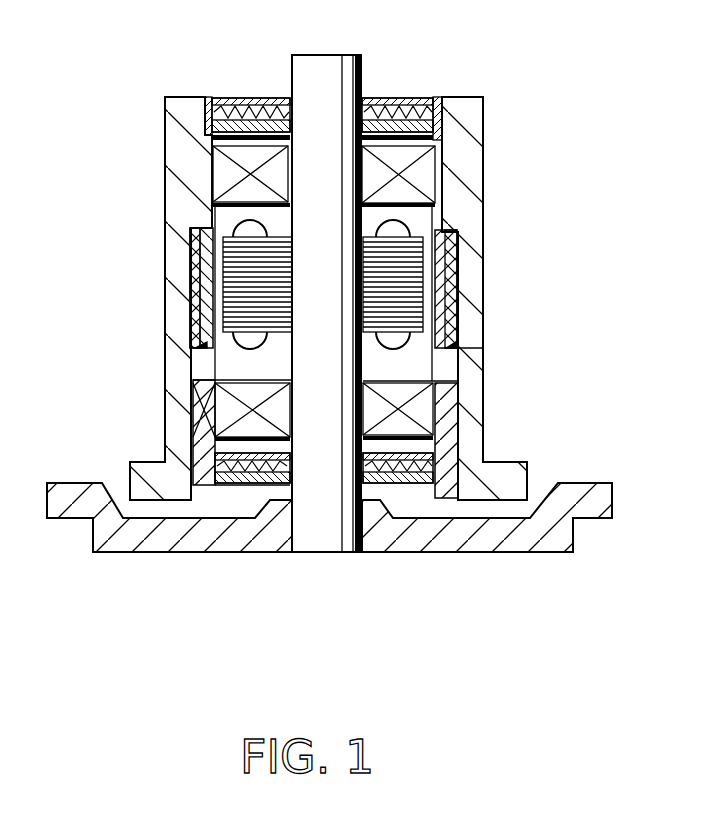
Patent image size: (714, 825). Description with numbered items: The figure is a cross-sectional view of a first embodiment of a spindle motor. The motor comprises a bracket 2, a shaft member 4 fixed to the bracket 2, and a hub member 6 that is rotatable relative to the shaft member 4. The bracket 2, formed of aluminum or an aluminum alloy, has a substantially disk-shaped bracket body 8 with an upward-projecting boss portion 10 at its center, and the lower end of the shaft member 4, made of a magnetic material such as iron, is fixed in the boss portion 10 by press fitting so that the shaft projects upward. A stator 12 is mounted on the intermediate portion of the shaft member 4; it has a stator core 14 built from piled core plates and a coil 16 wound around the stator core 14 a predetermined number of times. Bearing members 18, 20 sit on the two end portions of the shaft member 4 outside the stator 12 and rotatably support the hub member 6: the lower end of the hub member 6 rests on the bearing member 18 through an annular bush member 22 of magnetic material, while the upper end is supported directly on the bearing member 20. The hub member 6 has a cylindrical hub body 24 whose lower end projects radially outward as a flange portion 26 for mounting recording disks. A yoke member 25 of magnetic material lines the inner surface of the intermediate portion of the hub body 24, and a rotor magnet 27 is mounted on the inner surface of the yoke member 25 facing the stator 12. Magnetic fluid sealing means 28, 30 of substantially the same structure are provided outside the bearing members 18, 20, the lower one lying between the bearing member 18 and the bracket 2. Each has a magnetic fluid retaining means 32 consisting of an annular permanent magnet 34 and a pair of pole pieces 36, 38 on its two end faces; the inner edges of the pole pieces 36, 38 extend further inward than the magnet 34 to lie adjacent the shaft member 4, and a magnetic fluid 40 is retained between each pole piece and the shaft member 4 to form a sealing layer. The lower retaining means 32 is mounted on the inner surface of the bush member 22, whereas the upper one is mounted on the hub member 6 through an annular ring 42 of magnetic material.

The bracket 2 is at (448, 550).
The shaft member 4 is at (357, 53).
The hub member 6 is at (486, 338).
The bracket body 8 is at (510, 543).
The boss portion 10 is at (355, 513).
The stator 12 is at (222, 263).
The stator core 14 is at (392, 262).
The coil 16 is at (397, 340).
The bearing member 18 is at (427, 407).
The bearing member 20 is at (425, 180).
The bush member 22 is at (213, 488).
The hub body 24 is at (470, 255).
The yoke member 25 is at (453, 298).
The flange portion 26 is at (507, 478).
The rotor magnet 27 is at (207, 318).
The magnetic fluid sealing means 28 is at (237, 493).
The magnetic fluid sealing means 30 is at (247, 103).
The magnetic fluid retaining means 32 is at (418, 103).
The annular permanent magnet 34 is at (443, 115).
The pole piece 36 is at (440, 138).
The pole piece 38 is at (388, 108).
The magnetic fluid 40 is at (287, 102).
The annular ring 42 is at (200, 97).